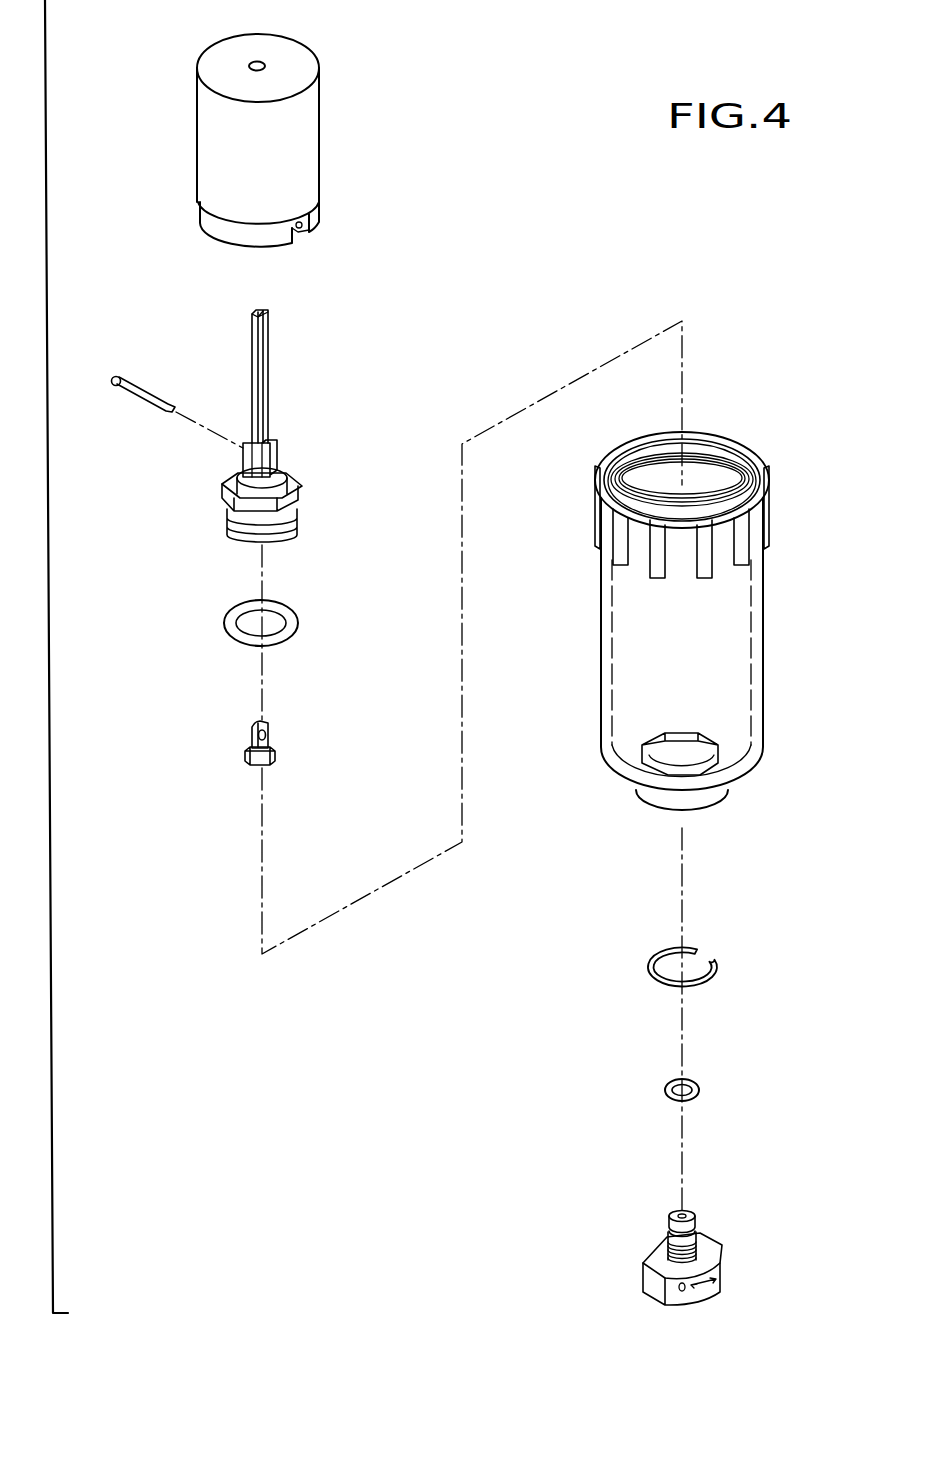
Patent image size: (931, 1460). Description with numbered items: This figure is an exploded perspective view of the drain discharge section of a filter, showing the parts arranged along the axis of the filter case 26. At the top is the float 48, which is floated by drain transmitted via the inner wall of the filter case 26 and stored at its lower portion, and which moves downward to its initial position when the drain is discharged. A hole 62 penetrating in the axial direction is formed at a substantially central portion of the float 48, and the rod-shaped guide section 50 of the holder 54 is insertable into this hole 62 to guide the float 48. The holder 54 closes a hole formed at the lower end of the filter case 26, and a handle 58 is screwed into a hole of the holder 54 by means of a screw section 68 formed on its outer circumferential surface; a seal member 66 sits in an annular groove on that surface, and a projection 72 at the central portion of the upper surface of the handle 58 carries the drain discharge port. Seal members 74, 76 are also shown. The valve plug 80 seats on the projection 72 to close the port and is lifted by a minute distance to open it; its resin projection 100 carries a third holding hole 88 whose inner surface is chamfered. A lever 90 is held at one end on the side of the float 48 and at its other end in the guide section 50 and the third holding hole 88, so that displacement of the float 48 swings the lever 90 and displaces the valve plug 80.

The filter case 26 is at (737, 610).
The float 48 is at (302, 138).
The guide section 50 is at (268, 388).
The holder 54 is at (292, 485).
The handle 58 is at (718, 1262).
The hole 62 is at (262, 66).
The seal member 66 is at (698, 1085).
The screw section 68 is at (700, 1242).
The projection 72 is at (683, 1214).
The seal member 74 is at (286, 612).
The seal member 76 is at (716, 960).
The valve plug 80 is at (277, 760).
The third holding hole 88 is at (270, 738).
The lever 90 is at (152, 395).
The projection 100 is at (263, 723).